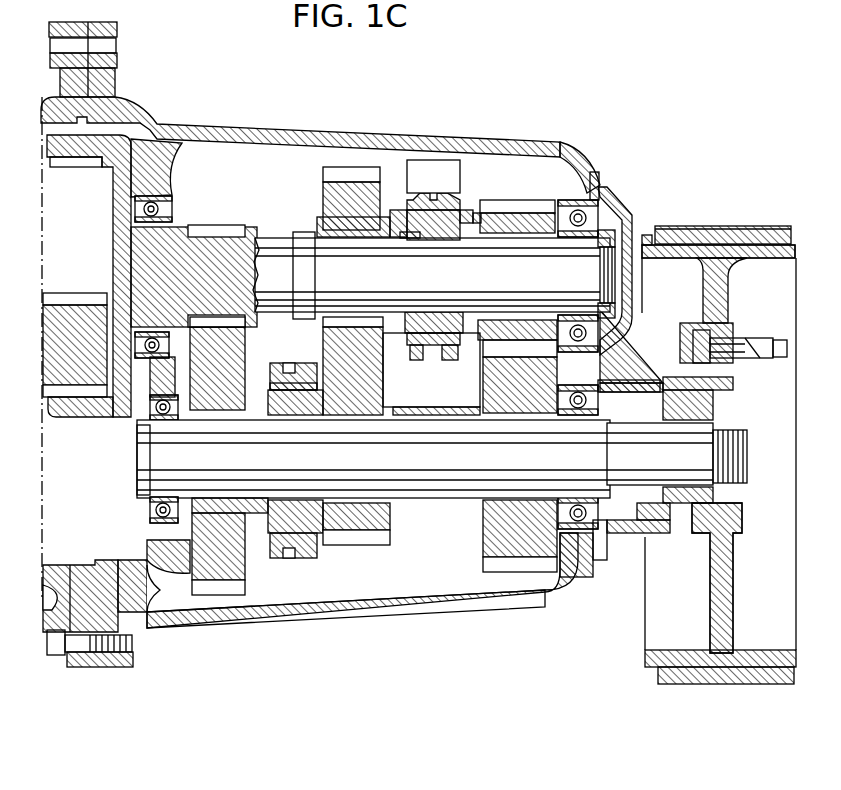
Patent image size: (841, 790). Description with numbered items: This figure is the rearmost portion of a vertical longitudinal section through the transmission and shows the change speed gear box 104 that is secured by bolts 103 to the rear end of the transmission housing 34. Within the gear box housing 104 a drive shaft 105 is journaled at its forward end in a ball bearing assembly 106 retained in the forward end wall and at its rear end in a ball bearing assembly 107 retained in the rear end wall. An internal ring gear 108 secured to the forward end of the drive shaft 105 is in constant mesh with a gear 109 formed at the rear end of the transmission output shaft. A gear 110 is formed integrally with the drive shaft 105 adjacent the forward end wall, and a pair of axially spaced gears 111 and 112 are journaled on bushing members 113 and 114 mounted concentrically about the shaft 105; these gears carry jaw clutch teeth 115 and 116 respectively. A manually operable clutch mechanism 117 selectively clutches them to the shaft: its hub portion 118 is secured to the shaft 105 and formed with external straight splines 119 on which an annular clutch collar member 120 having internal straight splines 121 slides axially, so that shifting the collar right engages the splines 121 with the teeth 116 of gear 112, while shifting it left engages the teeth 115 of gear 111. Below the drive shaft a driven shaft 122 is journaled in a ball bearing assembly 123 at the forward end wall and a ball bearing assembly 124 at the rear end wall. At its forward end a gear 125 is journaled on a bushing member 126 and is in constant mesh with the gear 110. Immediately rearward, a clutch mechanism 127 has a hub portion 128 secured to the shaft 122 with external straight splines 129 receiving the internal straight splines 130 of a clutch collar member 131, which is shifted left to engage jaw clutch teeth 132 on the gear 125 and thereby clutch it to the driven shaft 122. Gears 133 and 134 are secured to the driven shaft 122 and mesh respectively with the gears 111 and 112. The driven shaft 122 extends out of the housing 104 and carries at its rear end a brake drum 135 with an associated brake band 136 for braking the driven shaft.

The transmission housing 34 is at (65, 598).
The bolts 103 is at (55, 656).
The change speed gear box 104 is at (304, 628).
The drive shaft 105 is at (270, 238).
The ball bearing assembly 106 is at (165, 205).
The ball bearing assembly 107 is at (607, 215).
The internal ring gear 108 is at (80, 418).
The gear 109 is at (72, 300).
The gear 110 is at (212, 225).
The gear 111 is at (352, 178).
The gear 112 is at (513, 213).
The bushing member 113 is at (342, 238).
The bushing member 114 is at (515, 243).
The jaw clutch teeth 115 is at (395, 210).
The jaw clutch teeth 116 is at (476, 212).
The clutch mechanism 117 is at (438, 182).
The hub portion 118 is at (462, 223).
The external straight splines 119 is at (405, 238).
The clutch collar member 120 is at (455, 195).
The internal straight splines 121 is at (433, 240).
The driven shaft 122 is at (452, 488).
The ball bearing assembly 123 is at (150, 514).
The ball bearing assembly 124 is at (600, 527).
The gear 125 is at (218, 597).
The bushing member 126 is at (205, 510).
The clutch mechanism 127 is at (300, 566).
The hub portion 128 is at (290, 510).
The external straight splines 129 is at (290, 405).
The internal straight splines 130 is at (308, 405).
The clutch collar member 131 is at (282, 366).
The jaw clutch teeth 132 is at (260, 390).
The gear 133 is at (357, 530).
The gear 134 is at (508, 567).
The brake drum 135 is at (733, 611).
The brake band 136 is at (705, 684).